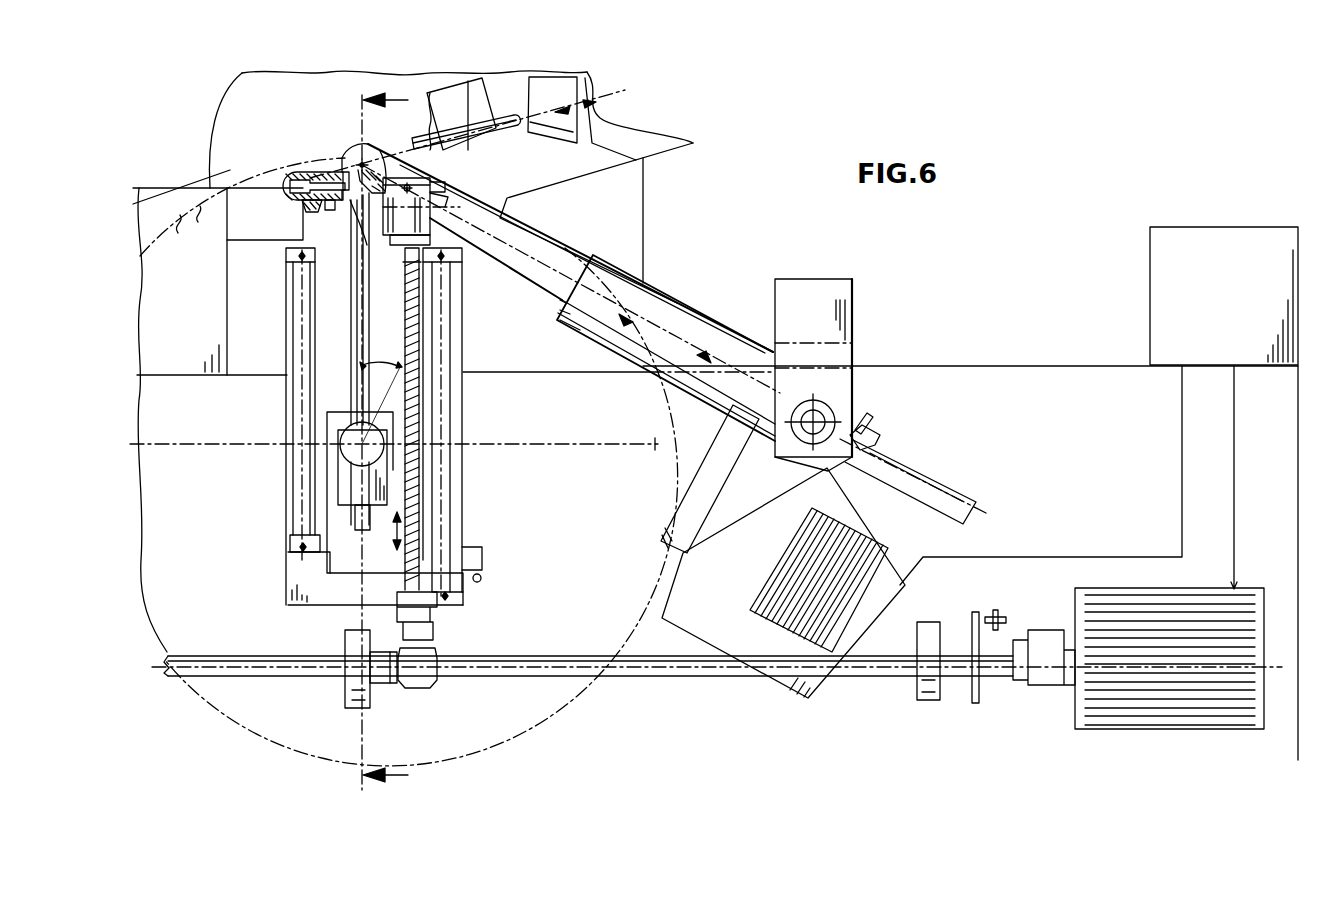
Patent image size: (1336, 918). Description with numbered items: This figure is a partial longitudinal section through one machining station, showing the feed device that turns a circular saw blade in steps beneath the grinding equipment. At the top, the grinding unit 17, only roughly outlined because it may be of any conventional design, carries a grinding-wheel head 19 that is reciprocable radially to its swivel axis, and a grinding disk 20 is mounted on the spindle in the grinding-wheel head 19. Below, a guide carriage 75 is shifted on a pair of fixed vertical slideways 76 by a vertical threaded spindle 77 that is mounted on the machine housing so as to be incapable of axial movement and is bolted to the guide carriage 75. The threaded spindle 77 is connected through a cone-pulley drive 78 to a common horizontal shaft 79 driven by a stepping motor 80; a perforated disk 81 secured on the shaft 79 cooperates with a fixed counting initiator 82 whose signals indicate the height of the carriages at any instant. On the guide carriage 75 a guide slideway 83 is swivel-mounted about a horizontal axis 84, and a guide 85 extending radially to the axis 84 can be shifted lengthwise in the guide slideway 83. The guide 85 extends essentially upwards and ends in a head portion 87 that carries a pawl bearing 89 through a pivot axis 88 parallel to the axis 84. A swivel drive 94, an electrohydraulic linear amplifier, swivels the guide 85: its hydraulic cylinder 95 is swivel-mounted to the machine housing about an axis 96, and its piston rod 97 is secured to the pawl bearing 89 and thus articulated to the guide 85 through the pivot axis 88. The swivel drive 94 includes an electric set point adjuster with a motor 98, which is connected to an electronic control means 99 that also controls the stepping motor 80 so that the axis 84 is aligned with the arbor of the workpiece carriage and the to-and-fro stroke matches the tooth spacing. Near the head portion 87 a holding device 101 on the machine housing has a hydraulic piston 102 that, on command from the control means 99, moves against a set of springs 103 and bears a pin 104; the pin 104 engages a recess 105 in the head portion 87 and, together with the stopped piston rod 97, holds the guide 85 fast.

The grinding unit 17 is at (238, 102).
The grinding-wheel head 19 is at (665, 131).
The grinding disk 20 is at (497, 112).
The guide carriage 75 is at (335, 560).
The vertical slideways 76 is at (290, 398).
The threaded spindle 77 is at (421, 342).
The cone-pulley drive 78 is at (425, 677).
The horizontal shaft 79 is at (617, 680).
The stepping motor 80 is at (1078, 712).
The perforated disk 81 is at (975, 705).
The counting initiator 82 is at (1002, 622).
The guide slideway 83 is at (332, 474).
The axis 84 is at (356, 434).
The guide 85 is at (356, 320).
The head portion 87 is at (356, 158).
The pivot axis 88 is at (350, 170).
The pawl bearing 89 is at (437, 205).
The swivel drive 94 is at (705, 240).
The hydraulic cylinder 95 is at (693, 322).
The axis 96 is at (850, 416).
The piston rod 97 is at (557, 272).
The motor 98 is at (842, 545).
The electronic control means 99 is at (1150, 290).
The holding device 101 is at (276, 160).
The hydraulic piston 102 is at (290, 182).
The set of springs 103 is at (298, 208).
The pin 104 is at (333, 211).
The recess 105 is at (370, 198).